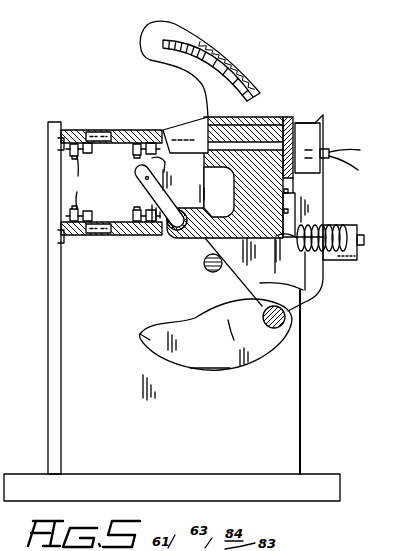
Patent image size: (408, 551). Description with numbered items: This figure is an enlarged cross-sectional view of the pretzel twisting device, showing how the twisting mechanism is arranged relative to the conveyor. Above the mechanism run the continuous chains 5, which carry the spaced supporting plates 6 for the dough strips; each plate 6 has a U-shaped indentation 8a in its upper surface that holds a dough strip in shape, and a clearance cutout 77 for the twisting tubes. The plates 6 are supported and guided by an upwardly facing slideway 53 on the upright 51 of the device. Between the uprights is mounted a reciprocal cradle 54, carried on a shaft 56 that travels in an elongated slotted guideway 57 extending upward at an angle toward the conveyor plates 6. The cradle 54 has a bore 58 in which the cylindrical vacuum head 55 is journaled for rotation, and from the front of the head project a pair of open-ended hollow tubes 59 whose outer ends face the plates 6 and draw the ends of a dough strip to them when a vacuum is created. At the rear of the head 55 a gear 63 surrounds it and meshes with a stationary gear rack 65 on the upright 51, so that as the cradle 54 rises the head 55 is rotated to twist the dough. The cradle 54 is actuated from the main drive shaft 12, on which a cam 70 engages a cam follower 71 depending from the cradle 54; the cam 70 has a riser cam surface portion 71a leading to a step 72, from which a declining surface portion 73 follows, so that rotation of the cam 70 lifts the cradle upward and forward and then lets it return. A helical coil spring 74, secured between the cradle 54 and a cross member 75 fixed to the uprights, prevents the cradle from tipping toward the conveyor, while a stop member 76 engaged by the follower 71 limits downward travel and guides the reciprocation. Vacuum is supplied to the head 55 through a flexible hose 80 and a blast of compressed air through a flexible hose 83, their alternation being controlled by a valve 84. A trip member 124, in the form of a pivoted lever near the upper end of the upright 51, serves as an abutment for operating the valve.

The continuous chains 5 is at (76, 182).
The supporting plates 6 is at (130, 129).
The U-shaped indentation 8a is at (105, 269).
The main drive shaft 12 is at (285, 321).
The upright 51 is at (300, 386).
The slideway 53 is at (62, 146).
The cradle 54 is at (323, 203).
The vacuum head 55 is at (262, 125).
The shaft 56 is at (176, 236).
The guideway 57 is at (142, 190).
The bore 58 is at (247, 117).
The tube 59 is at (188, 121).
The gear 63 is at (304, 130).
The gear rack 65 is at (182, 43).
The cam 70 is at (213, 346).
The cam follower 71 is at (304, 291).
The riser cam surface portion 71a is at (238, 297).
The step 72 is at (141, 331).
The declining surface portion 73 is at (213, 370).
The helical coil spring 74 is at (300, 251).
The cross member 75 is at (358, 262).
The stop member 76 is at (207, 271).
The clearance cutout 77 is at (98, 129).
The flexible hose 80 is at (358, 170).
The flexible hose 83 is at (360, 150).
The valve 84 is at (324, 148).
The trip member 124 is at (222, 45).